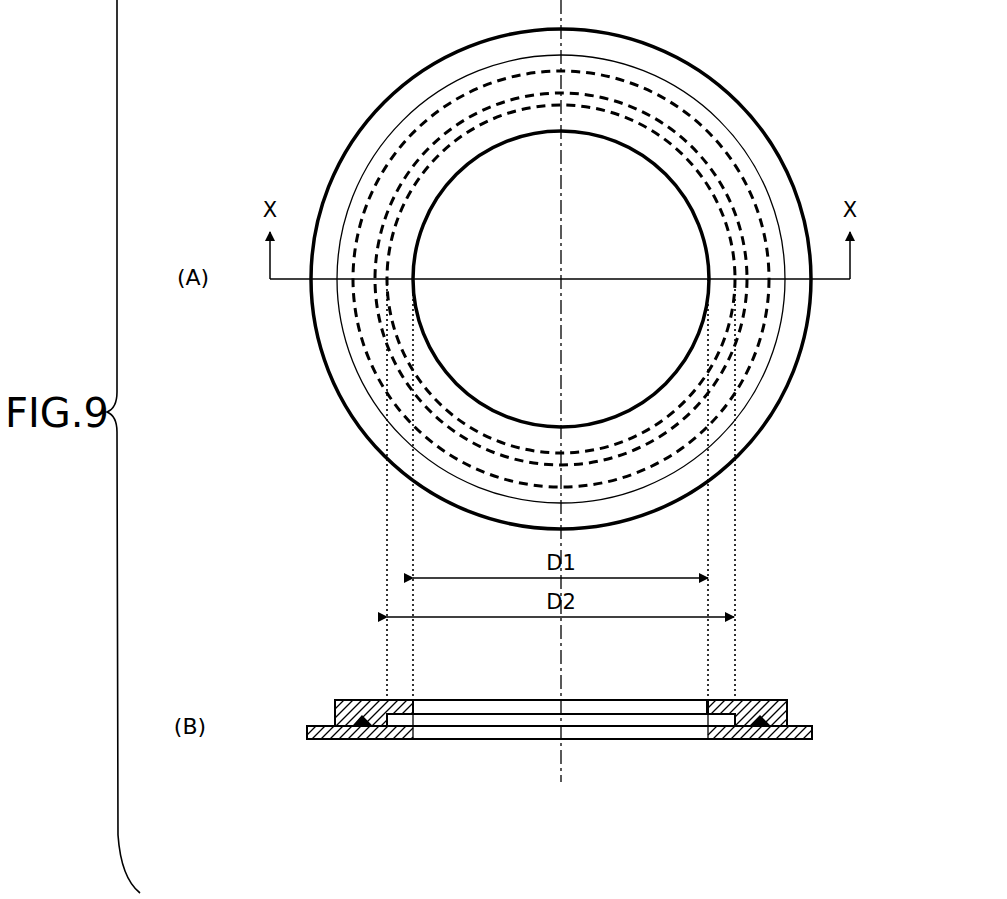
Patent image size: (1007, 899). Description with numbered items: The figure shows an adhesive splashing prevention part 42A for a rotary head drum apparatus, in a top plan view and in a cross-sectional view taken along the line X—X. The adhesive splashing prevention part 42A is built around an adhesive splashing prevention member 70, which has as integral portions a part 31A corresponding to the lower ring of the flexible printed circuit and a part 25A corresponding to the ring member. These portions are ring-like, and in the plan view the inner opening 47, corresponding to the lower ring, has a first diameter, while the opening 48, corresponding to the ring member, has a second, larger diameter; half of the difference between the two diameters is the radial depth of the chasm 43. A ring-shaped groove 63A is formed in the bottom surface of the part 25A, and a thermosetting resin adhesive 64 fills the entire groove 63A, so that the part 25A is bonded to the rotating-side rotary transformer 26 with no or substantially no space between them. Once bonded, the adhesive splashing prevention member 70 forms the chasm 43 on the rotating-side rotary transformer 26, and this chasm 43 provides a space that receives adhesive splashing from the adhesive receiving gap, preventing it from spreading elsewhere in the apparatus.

The part corresponding to the ring member 25A is at (789, 718).
The rotating-side rotary transformer 26 is at (755, 140).
The part corresponding to the lower ring 31A is at (747, 377).
The adhesive splashing prevention part 42A is at (654, 95).
The chasm 43 is at (392, 722).
The opening 47 is at (538, 253).
The opening 48 is at (447, 143).
The groove 63A is at (370, 342).
The thermosetting resin adhesive 64 is at (357, 298).
The adhesive splashing prevention member 70 is at (789, 345).